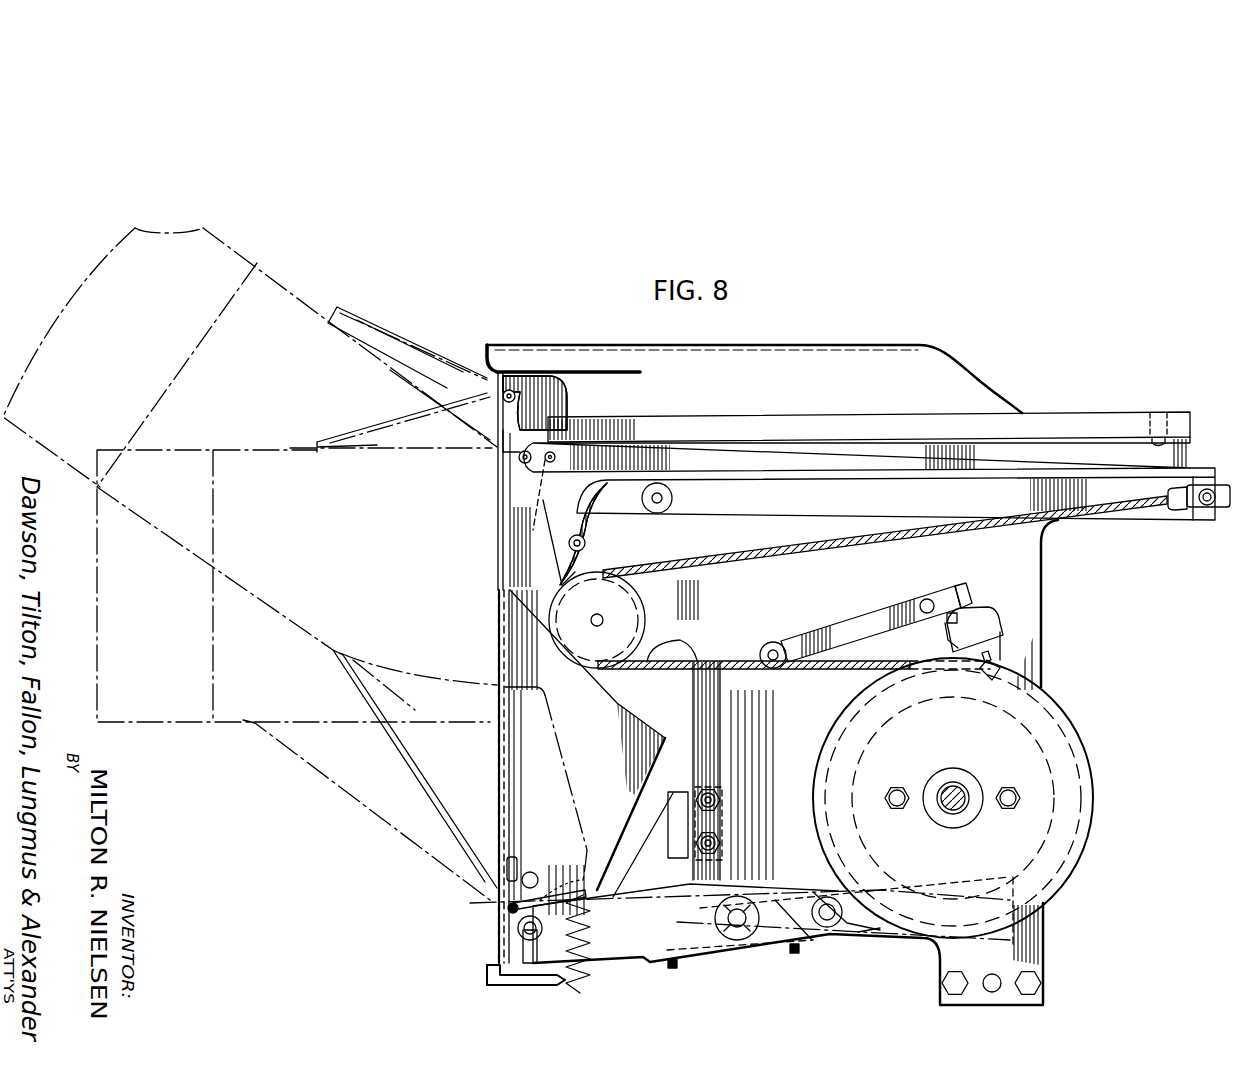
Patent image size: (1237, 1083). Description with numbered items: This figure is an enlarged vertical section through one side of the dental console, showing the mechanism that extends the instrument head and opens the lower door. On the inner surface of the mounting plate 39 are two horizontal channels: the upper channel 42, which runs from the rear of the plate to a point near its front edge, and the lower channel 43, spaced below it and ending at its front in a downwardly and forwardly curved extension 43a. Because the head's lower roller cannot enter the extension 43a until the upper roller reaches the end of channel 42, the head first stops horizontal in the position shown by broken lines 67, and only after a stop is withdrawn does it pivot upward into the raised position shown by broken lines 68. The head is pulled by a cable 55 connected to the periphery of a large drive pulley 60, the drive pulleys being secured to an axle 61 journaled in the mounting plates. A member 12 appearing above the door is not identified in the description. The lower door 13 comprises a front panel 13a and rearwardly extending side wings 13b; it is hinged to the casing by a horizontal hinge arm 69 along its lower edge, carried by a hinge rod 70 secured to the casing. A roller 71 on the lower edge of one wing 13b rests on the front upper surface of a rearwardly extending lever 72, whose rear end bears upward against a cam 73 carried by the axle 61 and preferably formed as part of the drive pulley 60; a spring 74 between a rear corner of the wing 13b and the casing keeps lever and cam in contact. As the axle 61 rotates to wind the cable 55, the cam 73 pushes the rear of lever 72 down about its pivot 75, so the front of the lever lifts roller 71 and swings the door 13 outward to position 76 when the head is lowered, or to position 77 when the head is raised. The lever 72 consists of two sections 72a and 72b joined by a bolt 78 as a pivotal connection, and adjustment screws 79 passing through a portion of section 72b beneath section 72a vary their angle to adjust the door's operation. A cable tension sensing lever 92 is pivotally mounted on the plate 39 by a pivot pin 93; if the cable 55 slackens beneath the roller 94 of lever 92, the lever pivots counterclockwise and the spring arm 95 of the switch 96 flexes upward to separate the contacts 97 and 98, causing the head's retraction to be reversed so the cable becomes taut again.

The front wall 12 is at (500, 518).
The lower door 13 is at (500, 767).
The front panel 13a is at (509, 753).
The side wings 13b is at (610, 712).
The mounting plate 39 is at (1042, 634).
The upper channel 42 is at (758, 440).
The lower channel 43 is at (831, 485).
The curved extension 43a is at (587, 521).
The cable 55 is at (837, 542).
The drive pulley 60 is at (1067, 721).
The axle 61 is at (953, 786).
The broken lines (horizontal first extended head position) 67 is at (183, 450).
The broken lines (raised second extended head position) 68 is at (292, 284).
The hinge arm 69 is at (521, 873).
The hinge rod 70 is at (505, 910).
The roller 71 is at (508, 928).
The lever 72 is at (843, 938).
The lever section 72a is at (868, 921).
The lever section 72b is at (637, 941).
The cam 73 is at (1083, 775).
The spring 74 is at (600, 986).
The pivot 75 is at (823, 899).
The broken lines (door position for lowered head) 76 is at (360, 807).
The broken lines (door position for raised head) 77 is at (395, 748).
The bolt 78 is at (737, 905).
The adjustment screws 79 is at (680, 967).
The cable tension sensing lever 92 is at (873, 613).
The pivot pin 93 is at (922, 602).
The roller 94 is at (773, 642).
The spring arm 95 is at (970, 608).
The switch 96 is at (1003, 621).
The contact 97 is at (947, 619).
The contact 98 is at (948, 630).